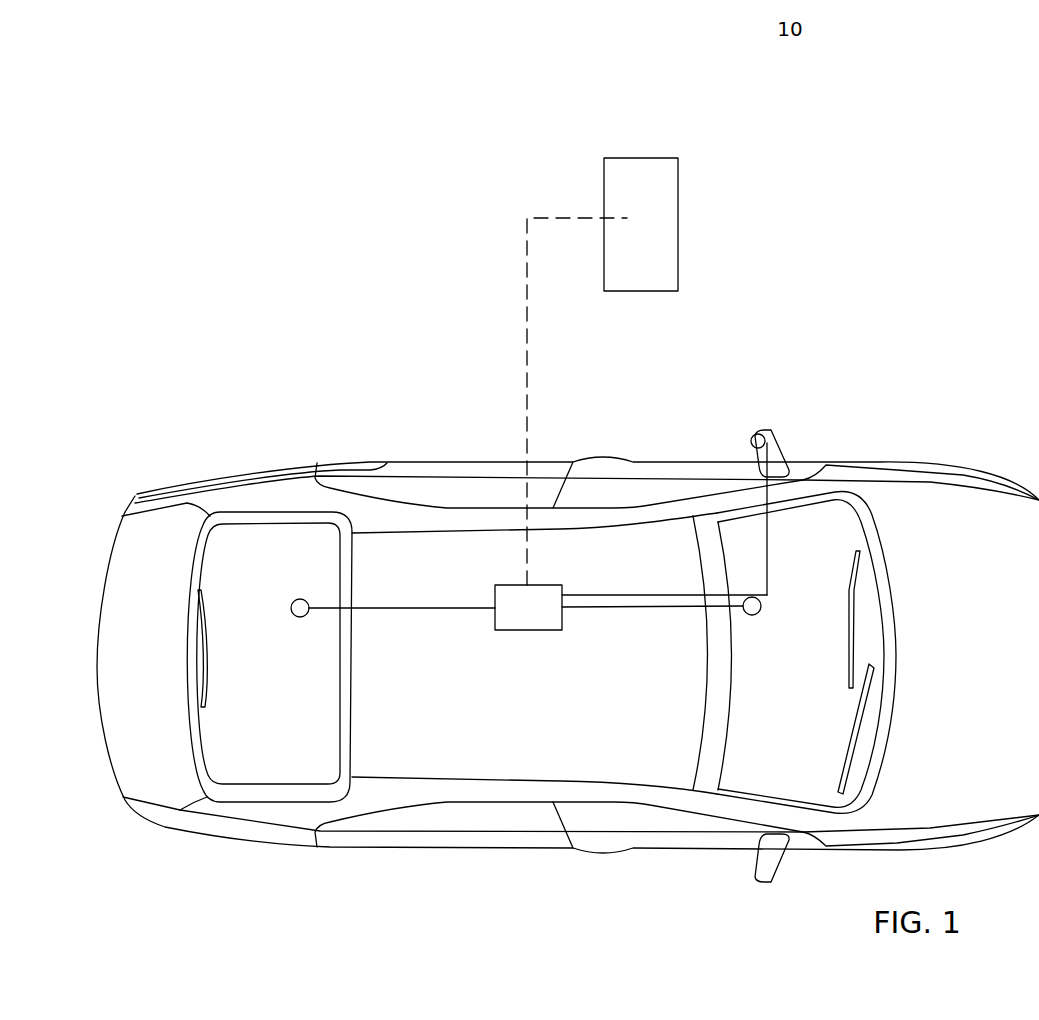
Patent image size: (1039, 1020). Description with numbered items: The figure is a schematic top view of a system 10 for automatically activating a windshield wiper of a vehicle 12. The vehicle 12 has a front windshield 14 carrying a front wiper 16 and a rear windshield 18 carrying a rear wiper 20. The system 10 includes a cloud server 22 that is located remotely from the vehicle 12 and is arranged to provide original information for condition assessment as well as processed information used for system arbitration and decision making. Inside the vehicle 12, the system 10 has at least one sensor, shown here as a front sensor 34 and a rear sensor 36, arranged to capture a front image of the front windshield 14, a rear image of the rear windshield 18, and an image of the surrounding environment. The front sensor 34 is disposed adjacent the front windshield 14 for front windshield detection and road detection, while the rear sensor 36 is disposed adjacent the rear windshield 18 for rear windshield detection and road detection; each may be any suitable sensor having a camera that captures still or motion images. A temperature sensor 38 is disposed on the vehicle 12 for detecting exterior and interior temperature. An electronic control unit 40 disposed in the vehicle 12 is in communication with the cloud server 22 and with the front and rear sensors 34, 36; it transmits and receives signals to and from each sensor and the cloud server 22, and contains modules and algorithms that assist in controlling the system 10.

The system 10 is at (290, 366).
The vehicle 12 is at (137, 496).
The front windshield 14 is at (799, 651).
The front wiper 16 is at (850, 625).
The rear windshield 18 is at (247, 672).
The rear wiper 20 is at (205, 657).
The cloud server 22 is at (635, 247).
The front sensor 34 is at (756, 616).
The rear sensor 36 is at (306, 600).
The temperature sensor 38 is at (756, 435).
The electronic control unit (ECU) 40 is at (518, 619).